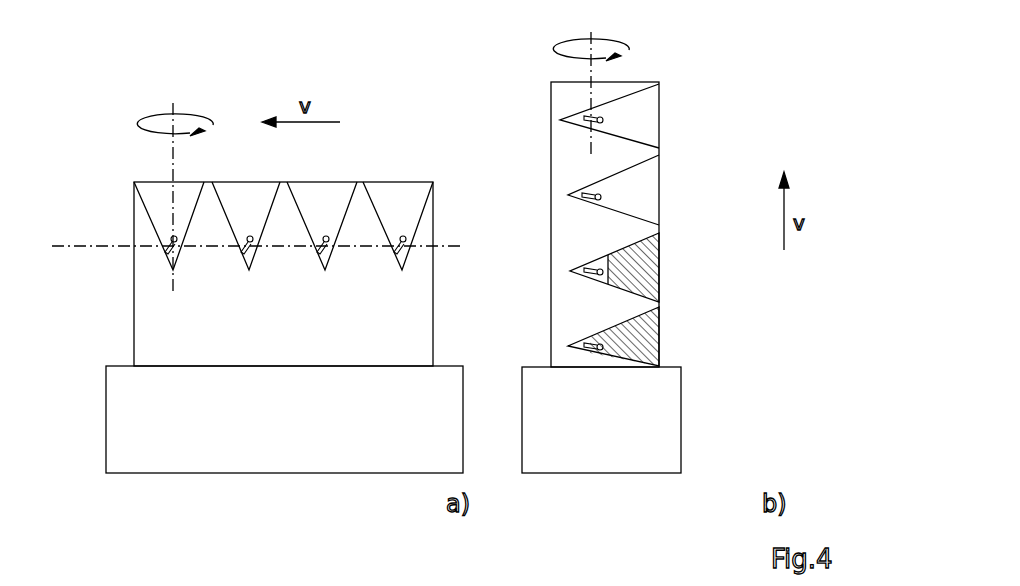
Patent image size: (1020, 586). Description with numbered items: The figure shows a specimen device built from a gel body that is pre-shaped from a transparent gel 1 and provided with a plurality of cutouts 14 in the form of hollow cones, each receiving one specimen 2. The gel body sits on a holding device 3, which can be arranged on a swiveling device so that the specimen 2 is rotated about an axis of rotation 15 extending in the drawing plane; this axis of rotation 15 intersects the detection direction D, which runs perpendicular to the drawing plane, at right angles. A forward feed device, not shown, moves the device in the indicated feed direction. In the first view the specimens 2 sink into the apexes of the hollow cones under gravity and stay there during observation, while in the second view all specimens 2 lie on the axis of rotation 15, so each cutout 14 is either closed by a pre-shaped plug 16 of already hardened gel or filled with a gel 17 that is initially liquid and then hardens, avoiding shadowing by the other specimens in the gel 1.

The transparent gel 1 is at (146, 350).
The specimen 2 is at (165, 258).
The holding device 3 is at (117, 434).
The cutout 14 is at (405, 196).
The axis of rotation 15 is at (172, 165).
The pre-shaped plug 16 is at (655, 272).
The gel 17 is at (655, 342).
The detection direction D is at (180, 253).